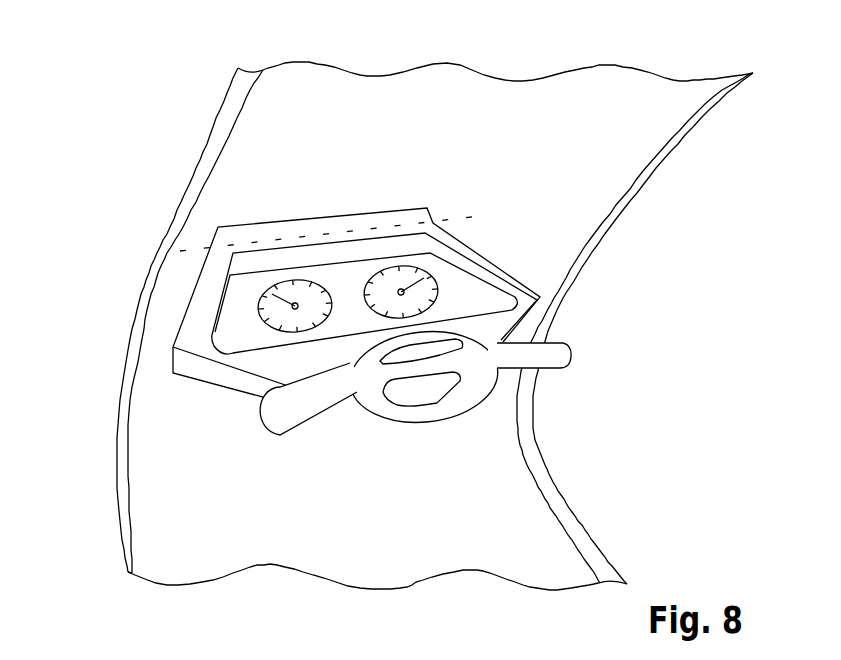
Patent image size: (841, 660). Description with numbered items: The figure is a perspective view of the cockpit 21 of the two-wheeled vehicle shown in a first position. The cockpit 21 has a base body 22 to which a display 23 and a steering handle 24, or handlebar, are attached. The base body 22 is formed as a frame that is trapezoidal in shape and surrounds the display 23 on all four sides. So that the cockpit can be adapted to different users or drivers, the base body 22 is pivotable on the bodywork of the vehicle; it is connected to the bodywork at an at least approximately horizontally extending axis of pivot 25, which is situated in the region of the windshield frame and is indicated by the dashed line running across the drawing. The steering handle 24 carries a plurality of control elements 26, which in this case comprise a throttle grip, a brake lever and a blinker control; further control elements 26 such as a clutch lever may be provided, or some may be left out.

The cockpit 21 is at (168, 288).
The base body 22 is at (490, 262).
The display 23 is at (262, 316).
The steering handle 24 is at (558, 361).
The axis of pivot 25 is at (455, 222).
The control elements 26 is at (272, 413).